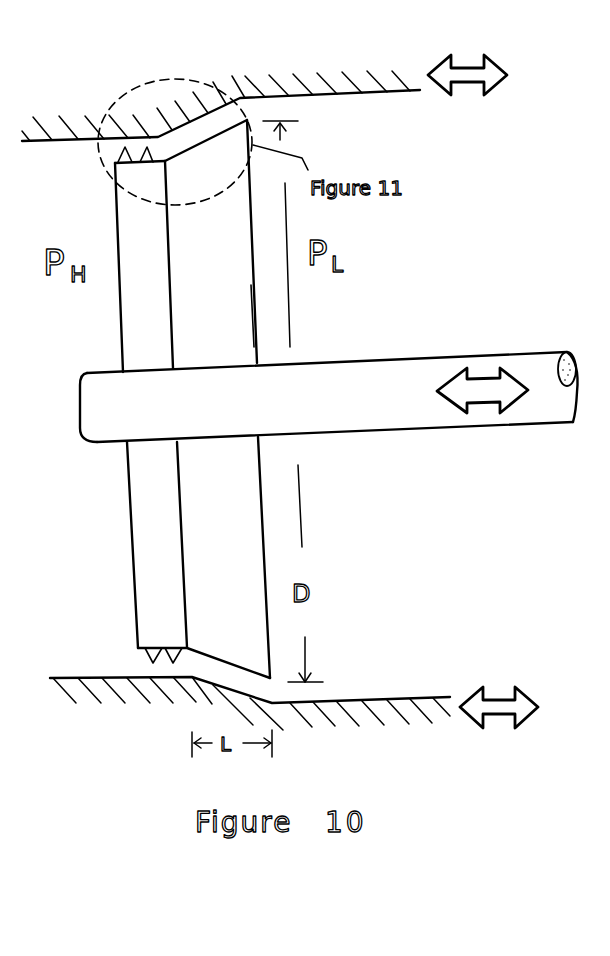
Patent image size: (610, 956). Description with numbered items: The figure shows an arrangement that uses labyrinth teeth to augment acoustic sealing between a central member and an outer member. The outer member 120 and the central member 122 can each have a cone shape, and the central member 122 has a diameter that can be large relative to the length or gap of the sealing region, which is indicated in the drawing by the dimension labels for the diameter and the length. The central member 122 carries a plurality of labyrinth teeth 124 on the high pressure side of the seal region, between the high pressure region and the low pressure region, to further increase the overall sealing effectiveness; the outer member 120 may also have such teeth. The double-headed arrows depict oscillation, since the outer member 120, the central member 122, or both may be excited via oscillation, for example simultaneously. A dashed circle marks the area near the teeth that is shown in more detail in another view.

The outer member 120 is at (92, 100).
The central member 122 is at (325, 331).
The labyrinth teeth 124 is at (128, 660).